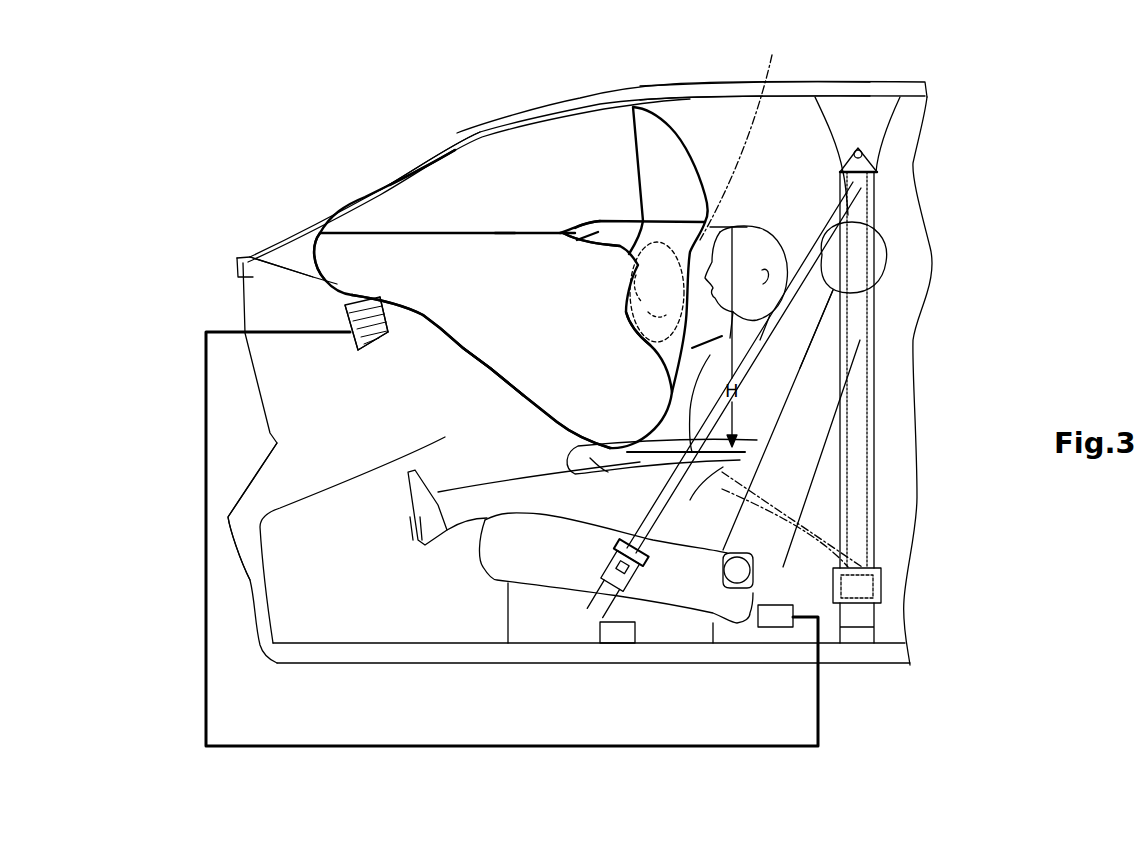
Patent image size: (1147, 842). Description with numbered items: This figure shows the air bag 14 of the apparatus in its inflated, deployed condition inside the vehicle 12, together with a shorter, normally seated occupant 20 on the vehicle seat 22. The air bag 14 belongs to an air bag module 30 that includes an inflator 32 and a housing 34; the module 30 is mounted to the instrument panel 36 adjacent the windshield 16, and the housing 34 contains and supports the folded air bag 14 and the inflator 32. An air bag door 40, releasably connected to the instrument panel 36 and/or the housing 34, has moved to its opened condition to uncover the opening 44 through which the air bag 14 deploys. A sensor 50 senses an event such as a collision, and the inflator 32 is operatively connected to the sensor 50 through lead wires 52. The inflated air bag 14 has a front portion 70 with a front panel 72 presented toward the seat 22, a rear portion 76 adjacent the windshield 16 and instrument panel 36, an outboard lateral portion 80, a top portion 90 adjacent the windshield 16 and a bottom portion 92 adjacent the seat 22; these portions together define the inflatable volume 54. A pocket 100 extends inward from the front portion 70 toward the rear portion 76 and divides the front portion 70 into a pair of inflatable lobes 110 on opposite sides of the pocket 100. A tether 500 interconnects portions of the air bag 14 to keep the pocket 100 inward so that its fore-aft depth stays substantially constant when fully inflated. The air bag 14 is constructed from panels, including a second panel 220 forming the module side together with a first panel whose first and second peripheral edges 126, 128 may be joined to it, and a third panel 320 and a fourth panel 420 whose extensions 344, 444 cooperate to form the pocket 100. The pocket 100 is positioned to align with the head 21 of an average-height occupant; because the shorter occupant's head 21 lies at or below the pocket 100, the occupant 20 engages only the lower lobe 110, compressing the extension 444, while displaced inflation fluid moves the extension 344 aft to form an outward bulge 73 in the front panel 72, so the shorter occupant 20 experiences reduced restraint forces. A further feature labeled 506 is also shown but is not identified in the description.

The vehicle 12 is at (825, 70).
The air bag 14 is at (394, 208).
The vehicle windshield 16 is at (463, 131).
The occupant 20 is at (727, 341).
The head 21 is at (762, 258).
The vehicle seat 22 is at (807, 373).
The air bag module 30 is at (344, 315).
The inflator 32 is at (355, 349).
The housing 34 is at (370, 350).
The instrument panel 36 is at (333, 460).
The air bag door 40 is at (340, 291).
The opening 44 is at (381, 298).
The sensor 50 is at (778, 618).
The lead wires 52 is at (422, 747).
The inflatable volume 54 is at (424, 199).
The front portion 70 is at (667, 155).
The front panel 72 is at (680, 225).
The outward bulge 73 is at (738, 142).
The rear portion 76 is at (337, 257).
The lateral portion 80 is at (458, 190).
The top portion 90 is at (565, 133).
The bottom portion 92 is at (517, 372).
The pocket 100 is at (580, 246).
The inflatable lobes 110 is at (588, 135).
The first peripheral edge 126 is at (425, 160).
The second peripheral edge 128 is at (530, 413).
The second panel 220 is at (503, 162).
The third panel 320 is at (637, 107).
The extension 344 is at (593, 225).
The fourth panel 420 is at (626, 318).
The extension 444 is at (606, 252).
The tether 500 is at (482, 233).
The seam 506 is at (563, 232).